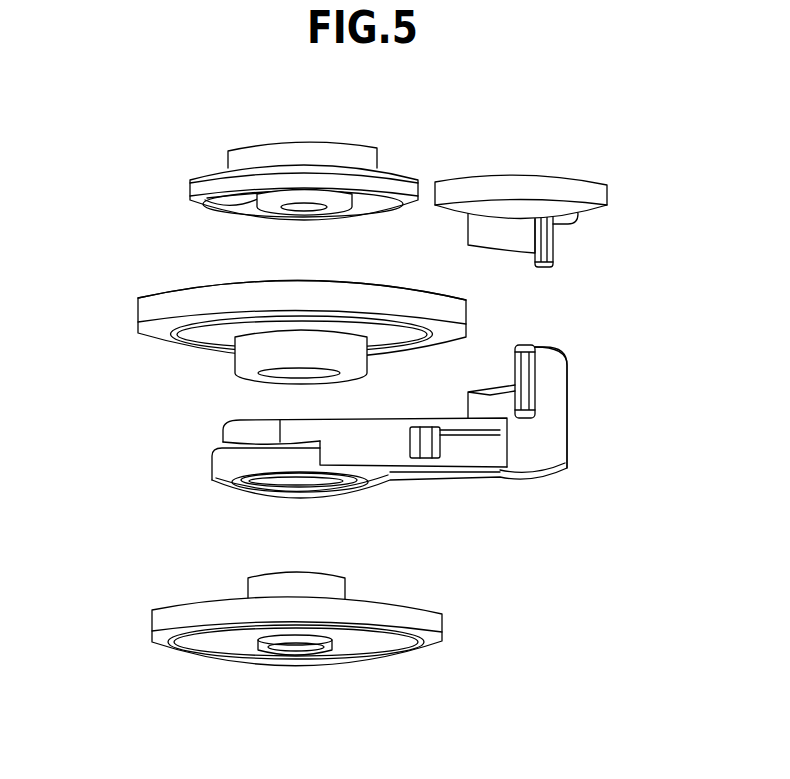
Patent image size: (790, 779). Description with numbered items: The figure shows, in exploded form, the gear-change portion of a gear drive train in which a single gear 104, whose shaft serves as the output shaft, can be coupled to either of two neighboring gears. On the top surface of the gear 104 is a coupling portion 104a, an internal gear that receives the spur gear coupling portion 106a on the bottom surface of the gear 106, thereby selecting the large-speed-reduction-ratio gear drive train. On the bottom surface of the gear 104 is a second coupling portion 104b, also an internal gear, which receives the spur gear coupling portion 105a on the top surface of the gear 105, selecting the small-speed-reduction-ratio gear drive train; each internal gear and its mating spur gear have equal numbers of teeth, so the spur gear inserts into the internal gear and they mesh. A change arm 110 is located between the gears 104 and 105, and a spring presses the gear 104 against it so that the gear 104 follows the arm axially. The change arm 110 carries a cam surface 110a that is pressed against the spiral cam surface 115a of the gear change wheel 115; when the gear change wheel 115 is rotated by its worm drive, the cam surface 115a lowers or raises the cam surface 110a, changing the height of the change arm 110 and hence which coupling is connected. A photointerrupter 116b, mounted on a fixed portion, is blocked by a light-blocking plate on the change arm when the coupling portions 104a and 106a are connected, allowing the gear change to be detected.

The gear 104 is at (253, 317).
The coupling portion 104a is at (187, 285).
The coupling portion 104b is at (243, 373).
The gear 105 is at (254, 617).
The coupling portion 105a is at (335, 585).
The gear 106 is at (279, 175).
The coupling portion 106a is at (205, 200).
The change arm 110 is at (438, 421).
The cam surface 110a is at (558, 348).
The gear change wheel 115 is at (559, 196).
The cam surface 115a is at (570, 223).
The photointerrupter 116b is at (430, 447).